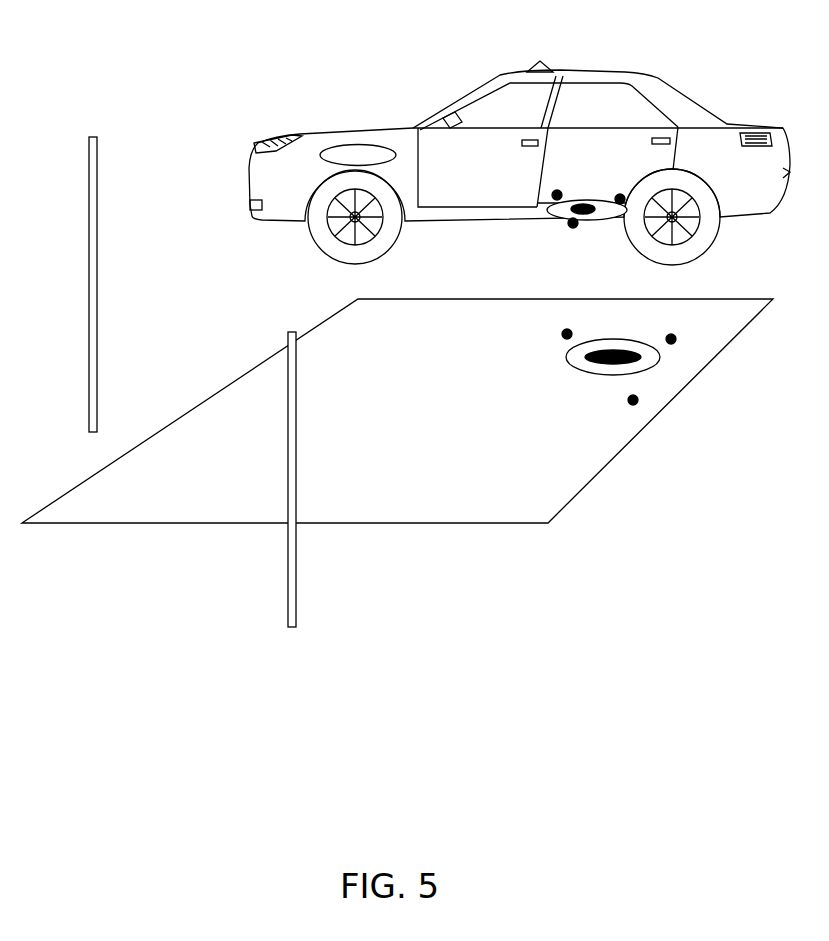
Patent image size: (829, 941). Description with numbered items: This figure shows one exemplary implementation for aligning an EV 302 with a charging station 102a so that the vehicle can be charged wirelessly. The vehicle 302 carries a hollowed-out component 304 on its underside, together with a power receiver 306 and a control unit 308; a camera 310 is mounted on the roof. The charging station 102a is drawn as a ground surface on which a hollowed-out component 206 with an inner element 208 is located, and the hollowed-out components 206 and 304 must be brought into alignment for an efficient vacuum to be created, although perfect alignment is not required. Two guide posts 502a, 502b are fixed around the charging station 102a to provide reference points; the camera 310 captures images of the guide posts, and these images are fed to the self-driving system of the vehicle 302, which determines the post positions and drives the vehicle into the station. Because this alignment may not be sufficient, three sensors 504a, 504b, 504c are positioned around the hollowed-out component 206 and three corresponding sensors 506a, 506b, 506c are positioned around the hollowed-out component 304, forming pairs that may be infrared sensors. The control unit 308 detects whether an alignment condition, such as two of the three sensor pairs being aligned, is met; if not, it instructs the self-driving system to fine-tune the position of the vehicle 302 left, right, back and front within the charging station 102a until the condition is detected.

The charging station 102a is at (312, 525).
The hollowed-out component 206 is at (588, 375).
The base coil 208 is at (612, 350).
The EV 302 is at (590, 72).
The hollowed-out component 304 is at (550, 211).
The power receiver 306 is at (584, 204).
The control unit 308 is at (347, 147).
The camera 310 is at (540, 61).
The guide post 502a is at (97, 137).
The guide post 502b is at (287, 552).
The sensor 504a is at (683, 331).
The sensor 504b is at (633, 400).
The sensor 504c is at (567, 334).
The sensor 506a is at (623, 196).
The sensor 506b is at (573, 228).
The sensor 506c is at (557, 190).